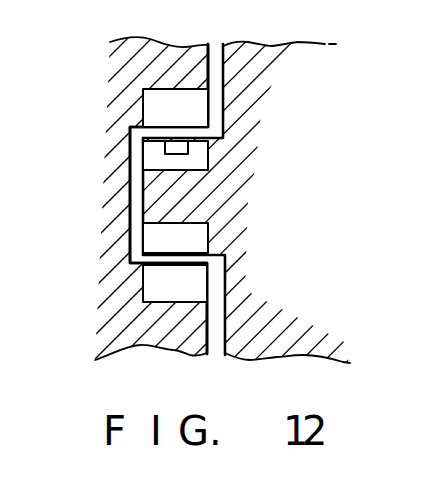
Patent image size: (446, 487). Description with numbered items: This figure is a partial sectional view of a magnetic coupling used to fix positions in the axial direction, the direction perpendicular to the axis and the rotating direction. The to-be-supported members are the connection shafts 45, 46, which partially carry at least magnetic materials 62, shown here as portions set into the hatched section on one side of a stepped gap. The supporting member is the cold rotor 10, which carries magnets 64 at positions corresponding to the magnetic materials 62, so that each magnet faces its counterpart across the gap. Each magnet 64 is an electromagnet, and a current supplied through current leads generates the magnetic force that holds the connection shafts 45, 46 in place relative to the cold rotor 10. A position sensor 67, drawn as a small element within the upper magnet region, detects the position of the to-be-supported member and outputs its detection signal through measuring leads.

The cold rotor 10 is at (294, 209).
The connection shaft 45 is at (110, 214).
The connection shaft 46 is at (169, 199).
The magnetic material 62 is at (142, 103).
The magnet 64 is at (187, 171).
The position sensor 67 is at (186, 149).